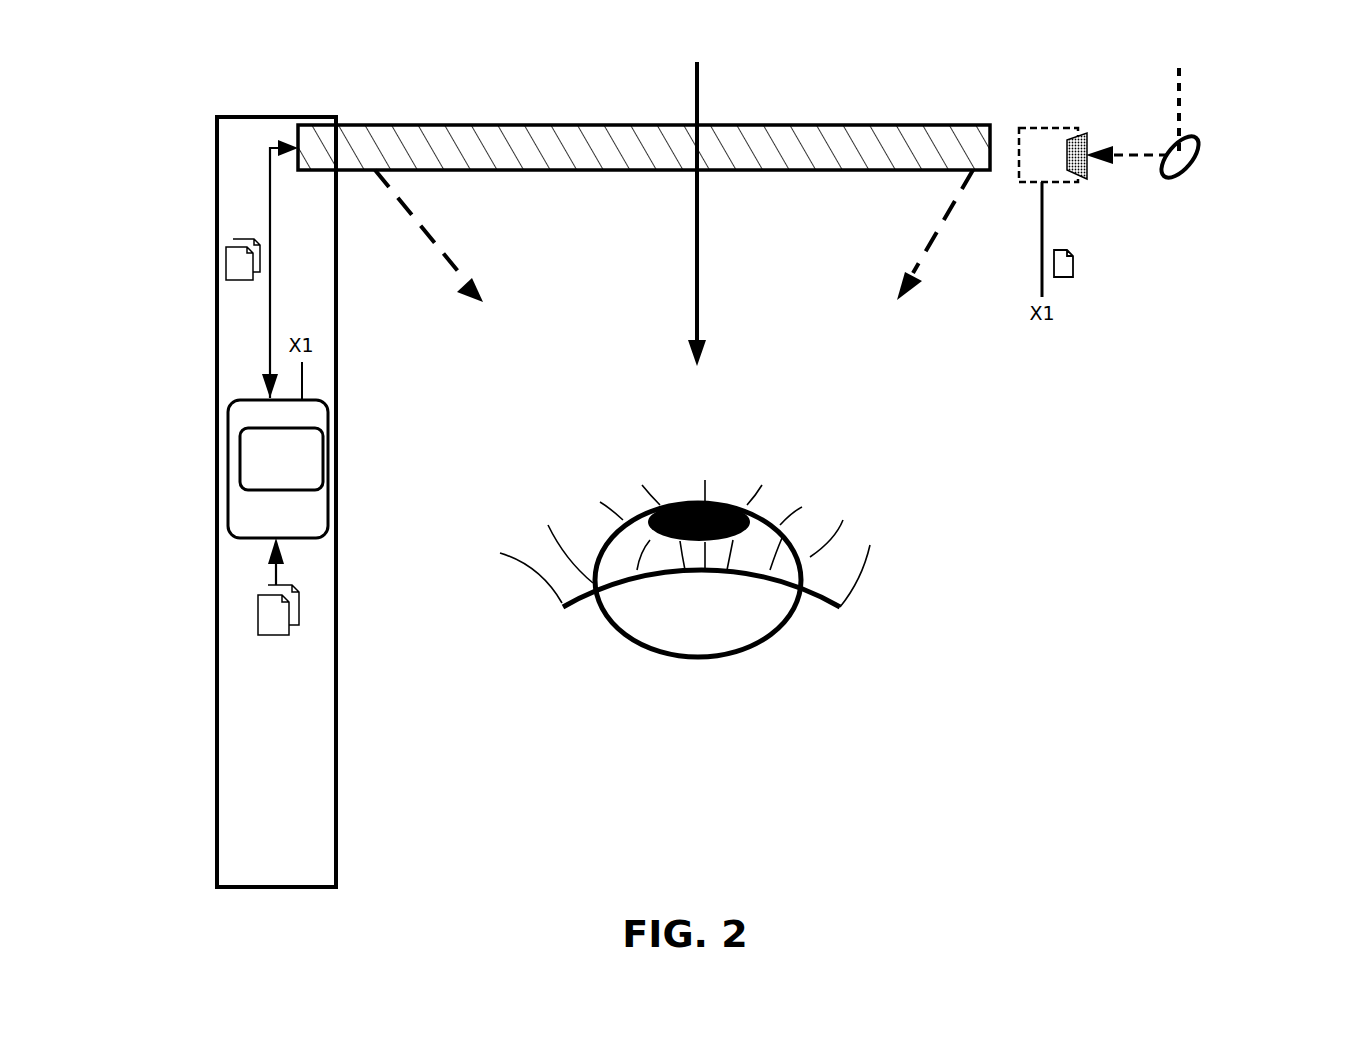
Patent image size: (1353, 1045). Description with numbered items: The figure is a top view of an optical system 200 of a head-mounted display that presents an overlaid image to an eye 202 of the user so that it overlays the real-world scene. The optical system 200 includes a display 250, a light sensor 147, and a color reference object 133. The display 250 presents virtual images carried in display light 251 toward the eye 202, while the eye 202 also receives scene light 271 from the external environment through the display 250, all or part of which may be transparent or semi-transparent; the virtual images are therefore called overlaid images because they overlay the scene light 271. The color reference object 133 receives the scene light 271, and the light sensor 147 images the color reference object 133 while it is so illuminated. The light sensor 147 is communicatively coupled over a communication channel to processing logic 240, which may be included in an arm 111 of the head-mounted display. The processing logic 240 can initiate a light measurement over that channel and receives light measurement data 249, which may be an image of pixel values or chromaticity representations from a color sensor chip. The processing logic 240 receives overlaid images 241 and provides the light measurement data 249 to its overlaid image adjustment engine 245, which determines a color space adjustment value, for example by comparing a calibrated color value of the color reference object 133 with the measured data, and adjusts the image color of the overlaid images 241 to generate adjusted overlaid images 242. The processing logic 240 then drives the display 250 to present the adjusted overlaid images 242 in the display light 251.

The optical system 200 is at (1318, 51).
The arm 111 is at (273, 876).
The display 250 is at (578, 125).
The scene light 271 is at (938, 198).
The display light 251 is at (783, 303).
The light sensor 147 is at (1032, 169).
The color reference object 133 is at (1190, 177).
The light measurement data 249 is at (1074, 268).
The processing logic 240 is at (282, 526).
The overlaid image adjustment engine 245 is at (266, 482).
The adjusted overlaid images 242 is at (256, 245).
The overlaid images 241 is at (270, 636).
The eye 202 is at (790, 668).